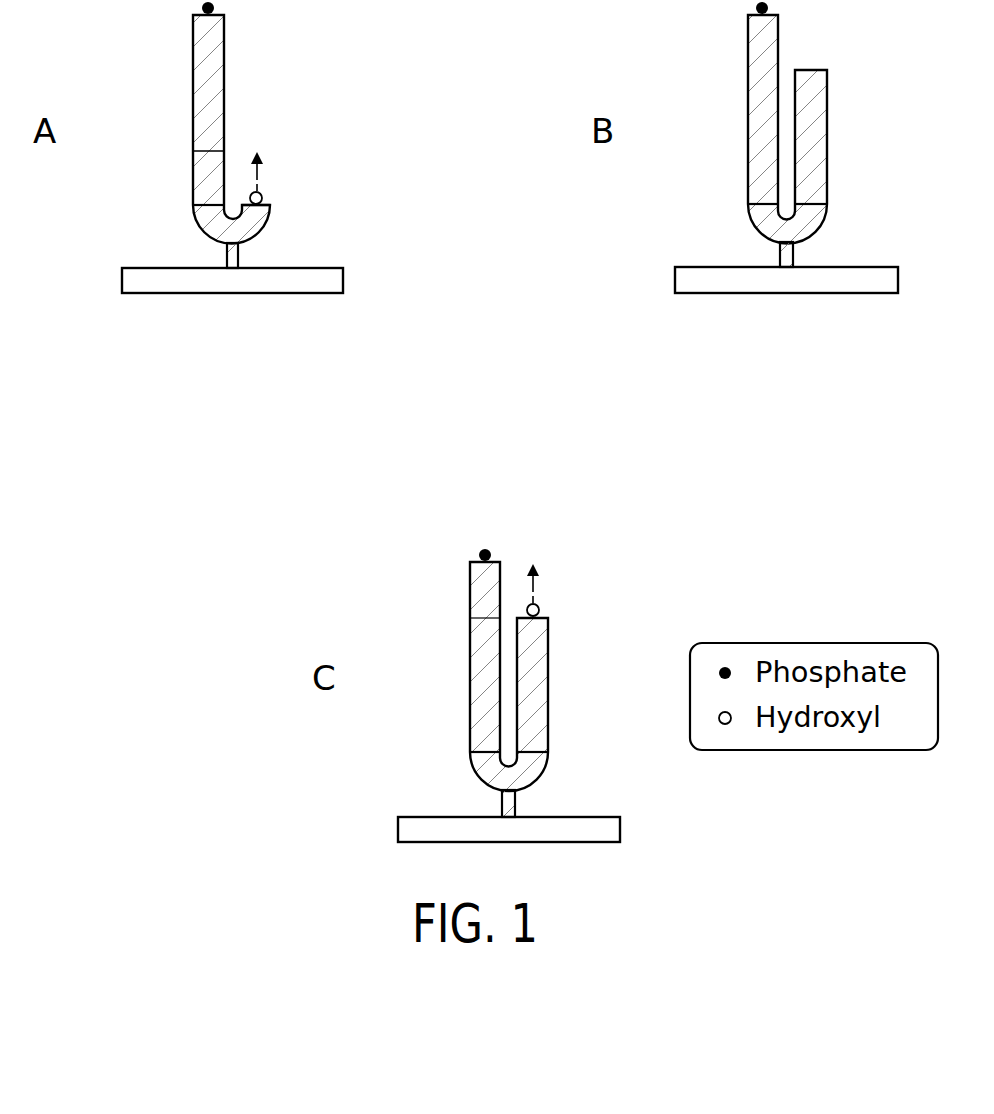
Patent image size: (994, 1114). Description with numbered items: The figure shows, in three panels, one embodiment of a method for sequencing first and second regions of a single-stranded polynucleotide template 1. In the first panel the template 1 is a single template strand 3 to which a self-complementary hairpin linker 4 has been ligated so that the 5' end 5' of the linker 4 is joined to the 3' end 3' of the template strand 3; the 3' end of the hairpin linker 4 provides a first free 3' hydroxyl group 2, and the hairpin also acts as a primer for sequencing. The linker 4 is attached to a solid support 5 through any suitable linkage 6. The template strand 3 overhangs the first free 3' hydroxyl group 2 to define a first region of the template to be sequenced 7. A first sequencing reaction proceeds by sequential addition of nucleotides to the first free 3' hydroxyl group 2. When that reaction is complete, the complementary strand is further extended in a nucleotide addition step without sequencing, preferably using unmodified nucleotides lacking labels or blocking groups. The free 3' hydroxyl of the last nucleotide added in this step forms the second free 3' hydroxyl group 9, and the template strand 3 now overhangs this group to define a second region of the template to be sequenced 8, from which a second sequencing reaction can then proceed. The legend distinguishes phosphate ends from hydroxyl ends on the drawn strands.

The polynucleotide template 1 is at (154, 50).
The first free 3' hydroxyl group 2 is at (272, 207).
The template strand 3 is at (181, 110).
The 3' end 3' is at (552, 407).
The self-complementary hairpin linker 4 is at (193, 222).
The solid support 5 is at (504, 554).
The 5' end 5' is at (485, 281).
The linkage 6 is at (240, 246).
The first region of the template to be sequenced 7 is at (157, 150).
The second region of the template to be sequenced 8 is at (463, 562).
The second free 3' hydroxyl group 9 is at (548, 618).